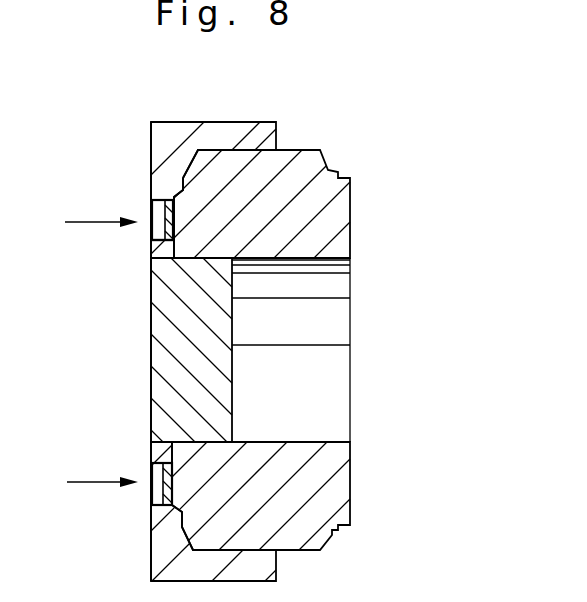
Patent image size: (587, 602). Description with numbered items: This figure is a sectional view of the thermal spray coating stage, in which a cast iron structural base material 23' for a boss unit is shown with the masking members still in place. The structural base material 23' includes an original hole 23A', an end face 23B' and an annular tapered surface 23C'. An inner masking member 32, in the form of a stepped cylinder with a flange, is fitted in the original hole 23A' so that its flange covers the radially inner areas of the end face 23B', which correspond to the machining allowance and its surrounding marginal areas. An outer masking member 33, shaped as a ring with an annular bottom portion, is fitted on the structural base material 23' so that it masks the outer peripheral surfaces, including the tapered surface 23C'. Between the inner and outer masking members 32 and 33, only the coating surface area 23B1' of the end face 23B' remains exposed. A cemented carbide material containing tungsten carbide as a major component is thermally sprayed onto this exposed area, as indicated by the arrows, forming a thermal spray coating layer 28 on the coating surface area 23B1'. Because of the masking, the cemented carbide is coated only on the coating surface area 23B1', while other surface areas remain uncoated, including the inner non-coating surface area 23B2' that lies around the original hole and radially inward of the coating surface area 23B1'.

The structural base material 23' is at (309, 204).
The original hole 23A' is at (312, 475).
The end face 23B' is at (110, 204).
The coating surface area 23B1' is at (108, 496).
The inner non-coating surface area 23B2' is at (110, 257).
The tapered surface 23C' is at (115, 185).
The thermal spray coating layer 28 is at (166, 476).
The inner masking member 32 is at (170, 340).
The outer masking member 33 is at (160, 553).